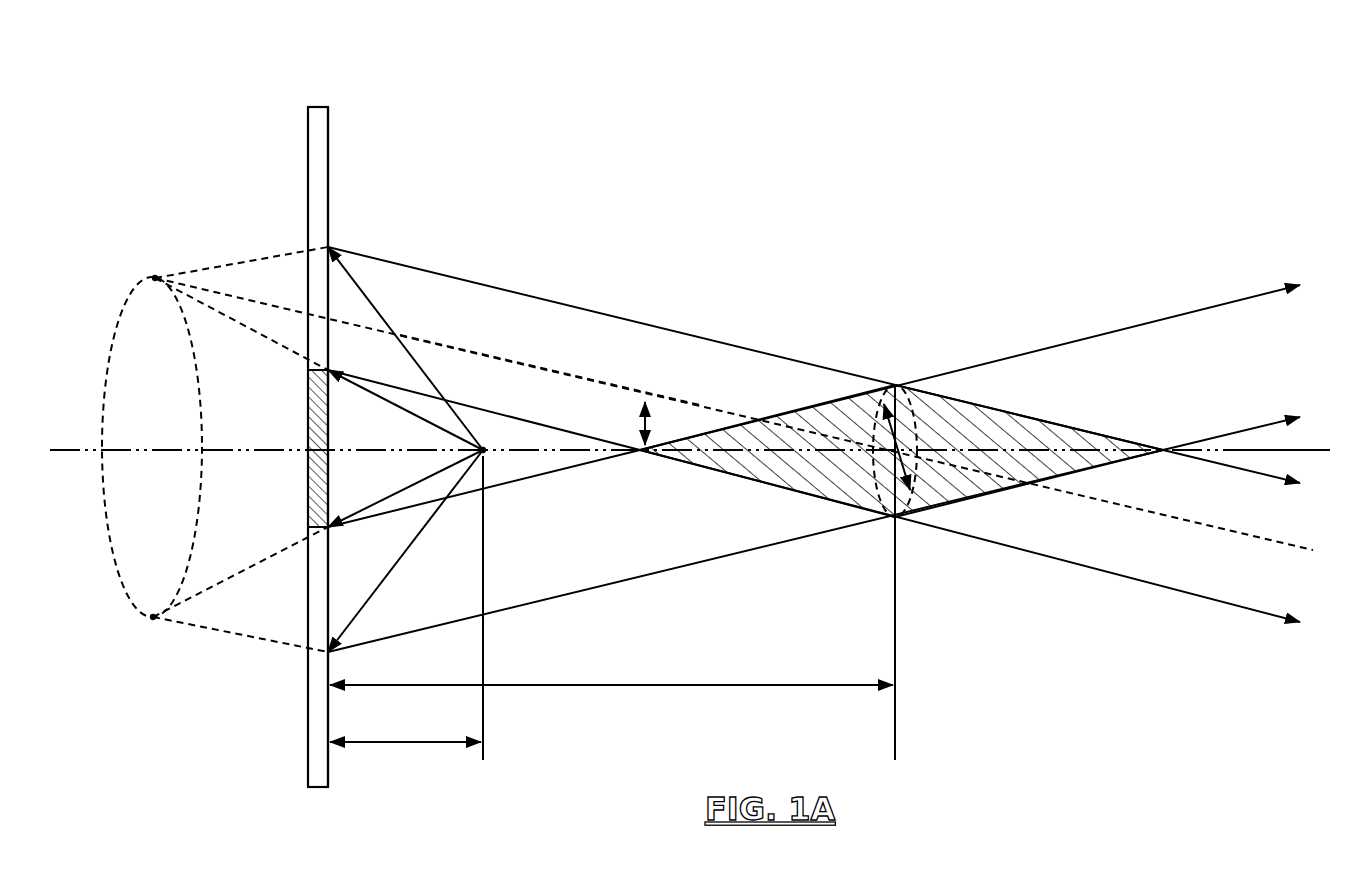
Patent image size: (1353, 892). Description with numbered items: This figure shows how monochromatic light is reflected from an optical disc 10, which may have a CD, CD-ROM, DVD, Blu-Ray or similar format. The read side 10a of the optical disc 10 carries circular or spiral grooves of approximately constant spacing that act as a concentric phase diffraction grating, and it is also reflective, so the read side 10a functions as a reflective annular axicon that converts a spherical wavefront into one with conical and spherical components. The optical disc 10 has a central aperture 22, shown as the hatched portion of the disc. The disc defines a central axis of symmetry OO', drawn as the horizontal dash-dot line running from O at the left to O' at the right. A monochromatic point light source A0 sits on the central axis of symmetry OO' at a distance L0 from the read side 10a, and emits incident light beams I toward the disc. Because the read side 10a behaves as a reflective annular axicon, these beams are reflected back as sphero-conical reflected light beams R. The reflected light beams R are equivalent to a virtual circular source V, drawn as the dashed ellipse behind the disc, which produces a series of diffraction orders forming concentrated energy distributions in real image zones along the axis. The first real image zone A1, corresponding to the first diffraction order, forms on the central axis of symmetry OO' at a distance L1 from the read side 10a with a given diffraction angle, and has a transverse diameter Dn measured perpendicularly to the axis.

The optical disc 10 is at (290, 212).
The read side 10a is at (330, 140).
The central aperture 22 is at (308, 418).
The virtual circular source V is at (155, 278).
The incident light beams I is at (372, 290).
The reflected light beams R is at (390, 637).
The monochromatic point light source A0 is at (487, 442).
The first real image zone A1 is at (895, 385).
The transverse diameter Dn is at (905, 403).
The distance from point light source to read side L0 is at (405, 759).
The distance from read side to first real image zone L1 is at (611, 668).
The central axis of symmetry O is at (690, 433).
The central axis of symmetry O' is at (1291, 435).